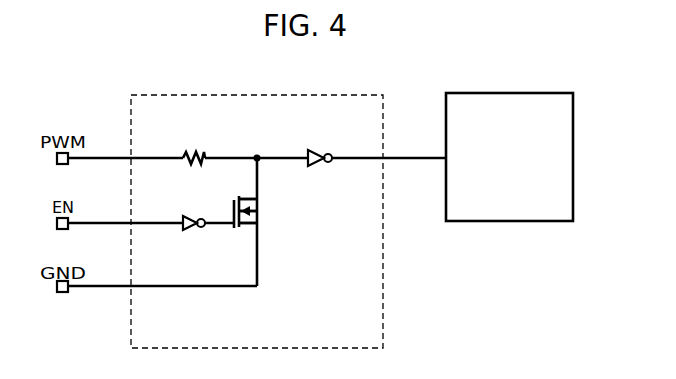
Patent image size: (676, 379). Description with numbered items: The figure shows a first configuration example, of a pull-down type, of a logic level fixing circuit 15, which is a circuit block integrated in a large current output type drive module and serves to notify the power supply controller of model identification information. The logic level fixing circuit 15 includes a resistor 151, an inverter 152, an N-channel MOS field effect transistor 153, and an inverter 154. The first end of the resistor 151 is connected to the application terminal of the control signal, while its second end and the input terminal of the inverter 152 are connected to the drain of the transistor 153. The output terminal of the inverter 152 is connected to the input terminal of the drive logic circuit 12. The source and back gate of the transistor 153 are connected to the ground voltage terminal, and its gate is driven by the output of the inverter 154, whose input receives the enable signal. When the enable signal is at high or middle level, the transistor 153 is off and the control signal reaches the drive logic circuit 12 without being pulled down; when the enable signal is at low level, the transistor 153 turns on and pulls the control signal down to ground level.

The drive logic circuit 12 is at (512, 93).
The logic level fixing circuit 15 is at (259, 95).
The resistor 151 is at (196, 149).
The inverter 152 is at (318, 149).
The N-channel MOS field effect transistor 153 is at (269, 212).
The inverter 154 is at (194, 211).